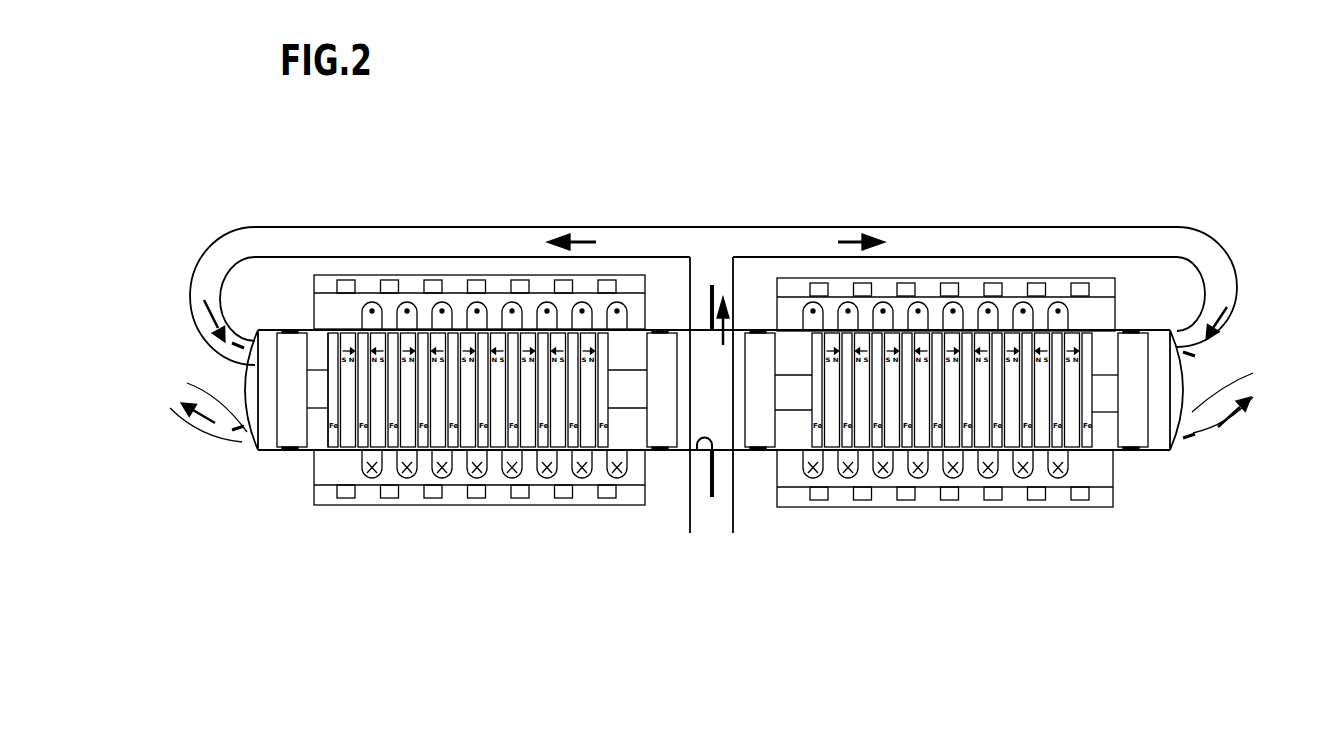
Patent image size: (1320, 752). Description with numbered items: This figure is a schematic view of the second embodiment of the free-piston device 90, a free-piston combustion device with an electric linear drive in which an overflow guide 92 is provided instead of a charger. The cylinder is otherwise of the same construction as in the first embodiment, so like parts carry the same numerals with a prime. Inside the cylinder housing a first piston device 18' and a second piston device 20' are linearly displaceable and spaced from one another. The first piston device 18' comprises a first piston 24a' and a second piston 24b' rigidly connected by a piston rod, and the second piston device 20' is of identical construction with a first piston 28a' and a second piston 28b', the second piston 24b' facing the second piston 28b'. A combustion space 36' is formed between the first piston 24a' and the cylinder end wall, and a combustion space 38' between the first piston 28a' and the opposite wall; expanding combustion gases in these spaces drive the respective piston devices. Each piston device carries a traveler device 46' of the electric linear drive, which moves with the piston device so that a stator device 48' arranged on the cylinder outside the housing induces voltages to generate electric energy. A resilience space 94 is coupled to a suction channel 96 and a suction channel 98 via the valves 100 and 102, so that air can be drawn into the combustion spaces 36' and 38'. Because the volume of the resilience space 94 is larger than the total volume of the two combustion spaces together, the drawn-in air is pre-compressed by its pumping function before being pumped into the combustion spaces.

The free-piston device 90 is at (556, 152).
The overflow guide 92 is at (938, 212).
The suction channel 96 is at (1023, 237).
The valve 100 is at (703, 334).
The valve 102 is at (697, 452).
The suction channel 98 is at (727, 495).
The resilience space 94 is at (748, 336).
The first piston 28a' is at (1164, 294).
The second piston 28b' is at (819, 285).
The stator device 48' is at (951, 235).
The traveler device 46' is at (952, 465).
The combustion space 36' is at (221, 428).
The combustion space 38' is at (1191, 438).
The first piston 24a' is at (257, 458).
The second piston 24b' is at (644, 463).
The first piston device 18' is at (311, 460).
The second piston device 20' is at (1129, 486).